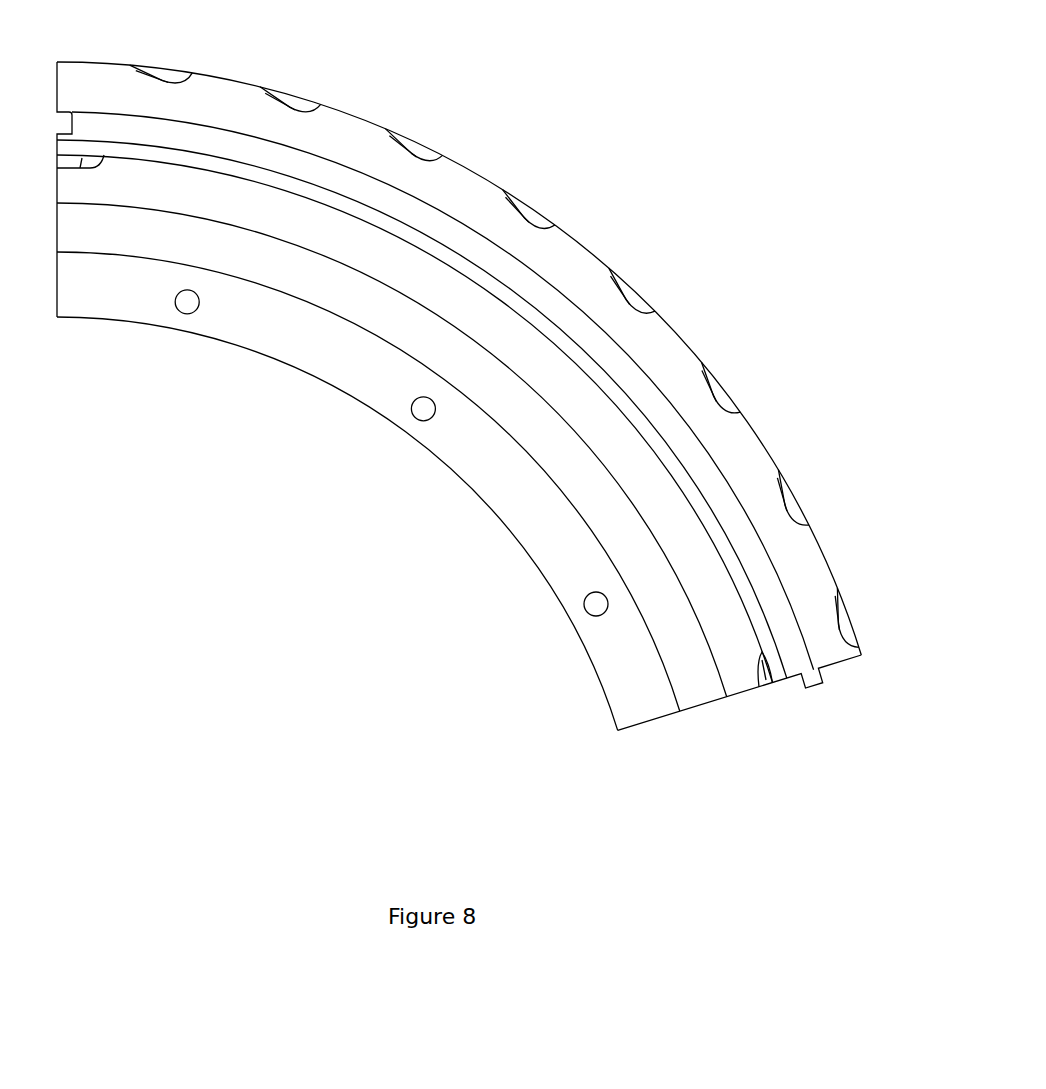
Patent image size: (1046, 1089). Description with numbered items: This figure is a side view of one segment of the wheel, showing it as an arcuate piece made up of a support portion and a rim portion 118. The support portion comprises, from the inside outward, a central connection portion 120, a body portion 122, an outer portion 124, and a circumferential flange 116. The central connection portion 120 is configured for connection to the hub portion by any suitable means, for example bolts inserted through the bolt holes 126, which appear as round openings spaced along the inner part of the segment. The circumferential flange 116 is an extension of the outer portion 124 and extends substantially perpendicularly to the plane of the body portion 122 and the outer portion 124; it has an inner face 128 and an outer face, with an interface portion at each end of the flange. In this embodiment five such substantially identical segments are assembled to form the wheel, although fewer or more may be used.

The circumferential flange 116 is at (358, 186).
The rim portion 118 is at (545, 250).
The central connection portion 120 is at (330, 362).
The body portion 122 is at (410, 325).
The outer portion 124 is at (593, 403).
The bolt holes 126 is at (593, 603).
The inner face 128 is at (722, 590).